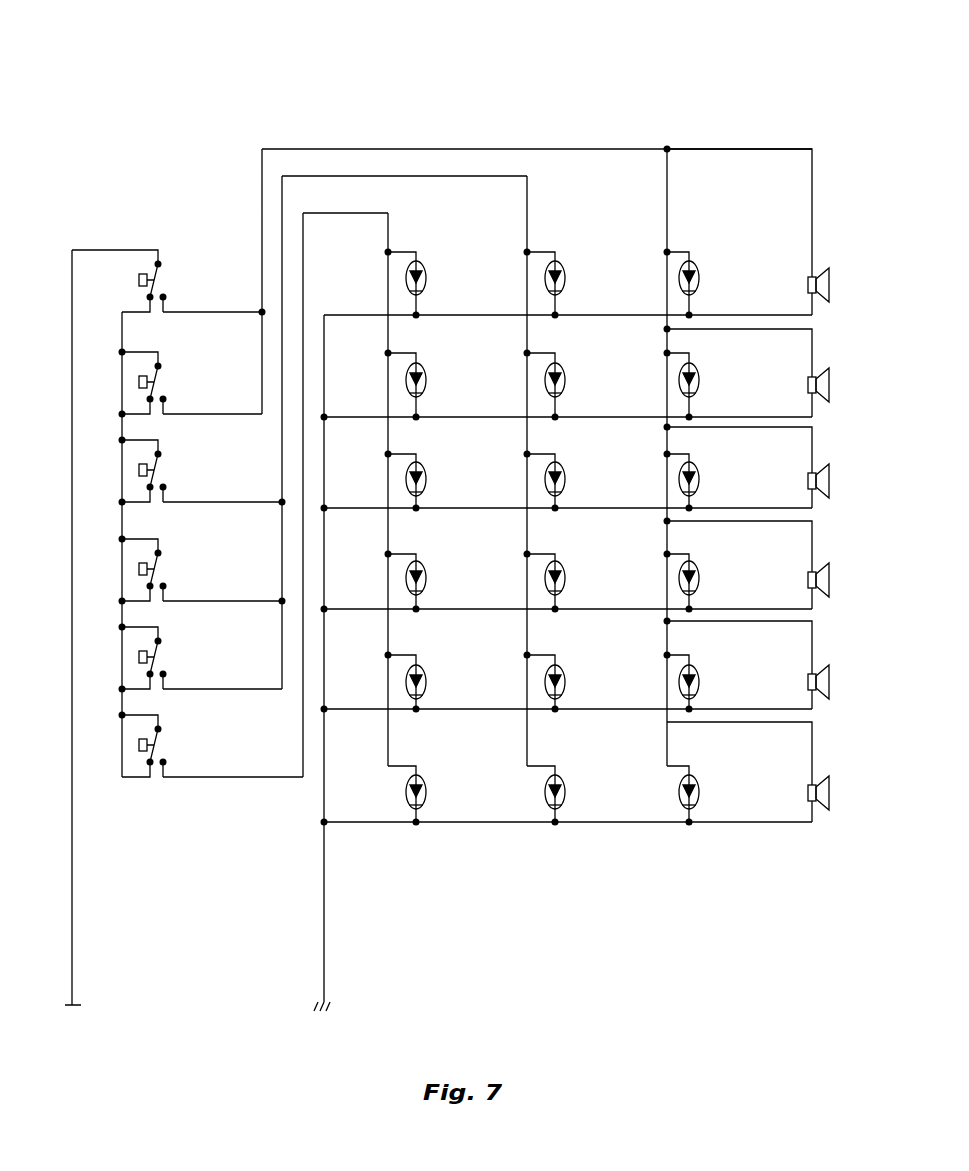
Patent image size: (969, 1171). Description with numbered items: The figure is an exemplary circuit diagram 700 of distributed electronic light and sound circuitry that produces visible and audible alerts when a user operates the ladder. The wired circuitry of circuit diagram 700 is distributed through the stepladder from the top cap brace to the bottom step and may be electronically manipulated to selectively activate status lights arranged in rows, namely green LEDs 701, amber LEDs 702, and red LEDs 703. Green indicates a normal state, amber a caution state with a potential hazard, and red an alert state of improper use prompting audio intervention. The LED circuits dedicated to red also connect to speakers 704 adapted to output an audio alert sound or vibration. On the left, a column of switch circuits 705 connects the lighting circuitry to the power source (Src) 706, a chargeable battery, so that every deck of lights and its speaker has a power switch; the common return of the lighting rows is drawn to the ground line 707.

The circuit diagram 700 is at (205, 116).
The green LED 701 is at (427, 272).
The amber LED 702 is at (566, 276).
The red LED 703 is at (700, 274).
The speaker 704 is at (808, 484).
The switch circuit 705 is at (158, 465).
The power source (Src) 706 is at (72, 945).
The ground line 707 is at (324, 940).